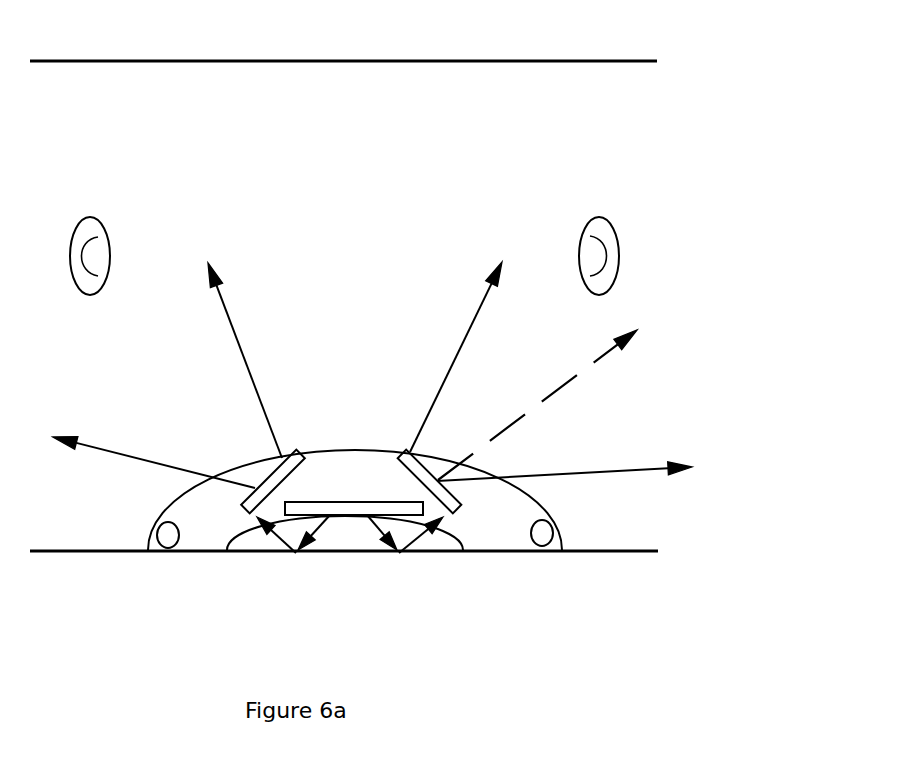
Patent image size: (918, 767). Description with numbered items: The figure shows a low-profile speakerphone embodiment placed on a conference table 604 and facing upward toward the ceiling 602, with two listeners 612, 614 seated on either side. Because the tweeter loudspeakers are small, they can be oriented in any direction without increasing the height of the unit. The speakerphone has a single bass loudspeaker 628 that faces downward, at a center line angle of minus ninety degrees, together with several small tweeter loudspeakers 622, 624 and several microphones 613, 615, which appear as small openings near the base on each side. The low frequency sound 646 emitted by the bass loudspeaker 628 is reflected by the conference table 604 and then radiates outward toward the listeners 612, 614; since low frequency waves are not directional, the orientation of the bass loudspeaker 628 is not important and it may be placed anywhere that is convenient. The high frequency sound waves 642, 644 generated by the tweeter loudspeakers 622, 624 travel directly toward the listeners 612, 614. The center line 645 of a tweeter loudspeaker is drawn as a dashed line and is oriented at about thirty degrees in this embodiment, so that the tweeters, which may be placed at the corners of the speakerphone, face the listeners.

The ceiling 602 is at (620, 60).
The conference table 604 is at (645, 550).
The listener 612 is at (97, 215).
The listener 614 is at (619, 240).
The microphone 613 is at (157, 531).
The microphone 615 is at (552, 515).
The tweeter loudspeaker 622 is at (297, 450).
The tweeter loudspeaker 624 is at (452, 492).
The bass loudspeaker 628 is at (293, 500).
The high frequency sound wave 642 is at (97, 445).
The high frequency sound wave 644 is at (462, 358).
The center line 645 is at (570, 383).
The low frequency sound 646 is at (402, 555).